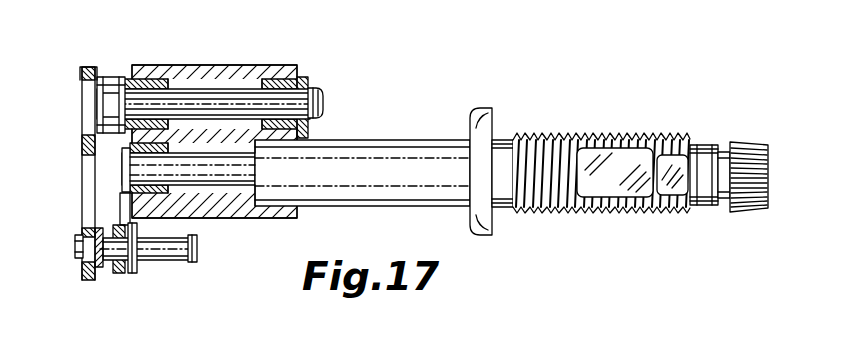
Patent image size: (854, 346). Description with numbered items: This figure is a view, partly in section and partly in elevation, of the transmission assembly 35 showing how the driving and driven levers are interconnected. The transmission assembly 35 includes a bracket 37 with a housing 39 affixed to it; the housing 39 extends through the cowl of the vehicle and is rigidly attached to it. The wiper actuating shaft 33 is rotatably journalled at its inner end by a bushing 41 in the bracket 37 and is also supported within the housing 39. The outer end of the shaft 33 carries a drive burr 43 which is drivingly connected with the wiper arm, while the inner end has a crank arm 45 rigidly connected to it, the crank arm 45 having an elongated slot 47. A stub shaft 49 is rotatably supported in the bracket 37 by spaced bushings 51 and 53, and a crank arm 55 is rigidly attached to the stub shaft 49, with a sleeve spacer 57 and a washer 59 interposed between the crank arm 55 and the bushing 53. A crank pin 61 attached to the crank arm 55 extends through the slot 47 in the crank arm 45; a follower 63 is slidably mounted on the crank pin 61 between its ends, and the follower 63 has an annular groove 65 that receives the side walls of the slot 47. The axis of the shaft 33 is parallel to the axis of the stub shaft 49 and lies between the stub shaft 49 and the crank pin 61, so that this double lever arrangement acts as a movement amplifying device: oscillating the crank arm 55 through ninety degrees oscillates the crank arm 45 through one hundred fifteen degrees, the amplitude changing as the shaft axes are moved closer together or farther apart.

The wiper actuating shaft 33 is at (237, 181).
The transmission assembly 35 is at (226, 66).
The bracket 37 is at (282, 79).
The housing 39 is at (404, 135).
The bushing 41 is at (157, 193).
The drive burr 43 is at (768, 178).
The crank arm 45 is at (123, 275).
The elongated slot 47 is at (123, 215).
The stub shaft 49 is at (324, 103).
The bushing 51 is at (280, 82).
The bushing 53 is at (152, 80).
The crank arm 55 is at (87, 279).
The sleeve spacer 57 is at (108, 77).
The washer 59 is at (127, 78).
The crank pin 61 is at (177, 255).
The follower 63 is at (117, 264).
The annular groove 65 is at (129, 267).